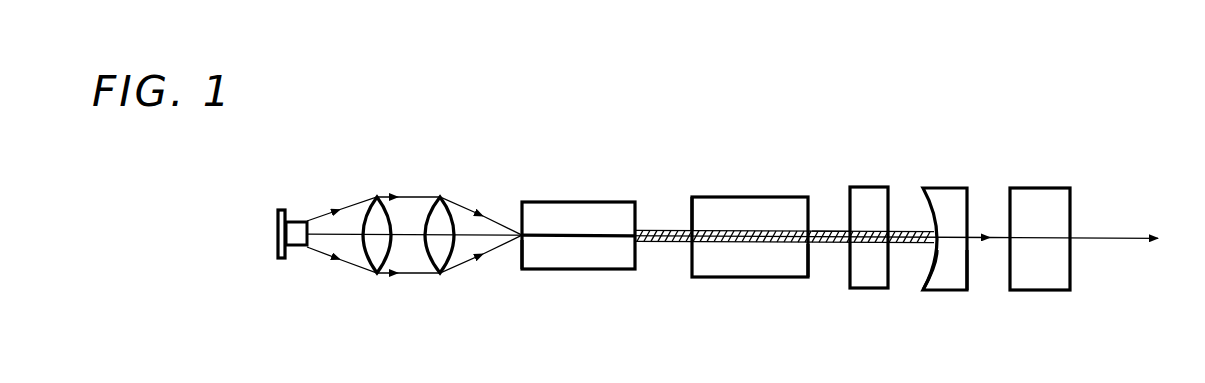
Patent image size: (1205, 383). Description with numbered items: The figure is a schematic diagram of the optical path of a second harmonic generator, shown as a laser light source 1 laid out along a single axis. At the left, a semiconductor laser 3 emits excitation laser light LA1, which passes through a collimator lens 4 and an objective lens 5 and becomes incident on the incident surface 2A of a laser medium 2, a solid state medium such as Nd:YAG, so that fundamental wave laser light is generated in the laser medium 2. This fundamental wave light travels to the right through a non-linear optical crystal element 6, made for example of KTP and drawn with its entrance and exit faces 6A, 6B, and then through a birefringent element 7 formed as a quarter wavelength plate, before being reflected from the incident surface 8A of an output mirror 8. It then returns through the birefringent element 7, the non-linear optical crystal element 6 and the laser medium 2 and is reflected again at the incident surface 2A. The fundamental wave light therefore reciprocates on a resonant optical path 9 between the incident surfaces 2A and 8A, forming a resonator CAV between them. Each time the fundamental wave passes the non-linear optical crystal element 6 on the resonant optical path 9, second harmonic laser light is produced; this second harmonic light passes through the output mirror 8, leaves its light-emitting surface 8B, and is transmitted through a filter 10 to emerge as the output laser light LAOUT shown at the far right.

The laser light source 1 is at (502, 102).
The laser medium 2 is at (552, 202).
The incident surface of the laser medium 2A is at (518, 257).
The semiconductor laser 3 is at (293, 250).
The collimator lens 4 is at (372, 265).
The objective lens 5 is at (429, 222).
The non-linear optical crystal element 6 is at (720, 278).
The entrance end face of laser medium 6 6A is at (688, 212).
The exit end face of laser medium 6 6B is at (813, 257).
The birefringent element 7 is at (863, 197).
The output mirror 8 is at (945, 188).
The incident surface of the output mirror 8A is at (925, 266).
The light-emitting surface of the output mirror 8B is at (974, 272).
The resonant optical path 9 is at (825, 228).
The filter 10 is at (1040, 188).
The excitation laser light LA1 is at (323, 214).
The resonator CAV is at (752, 174).
The output laser light LAOUT is at (1108, 240).